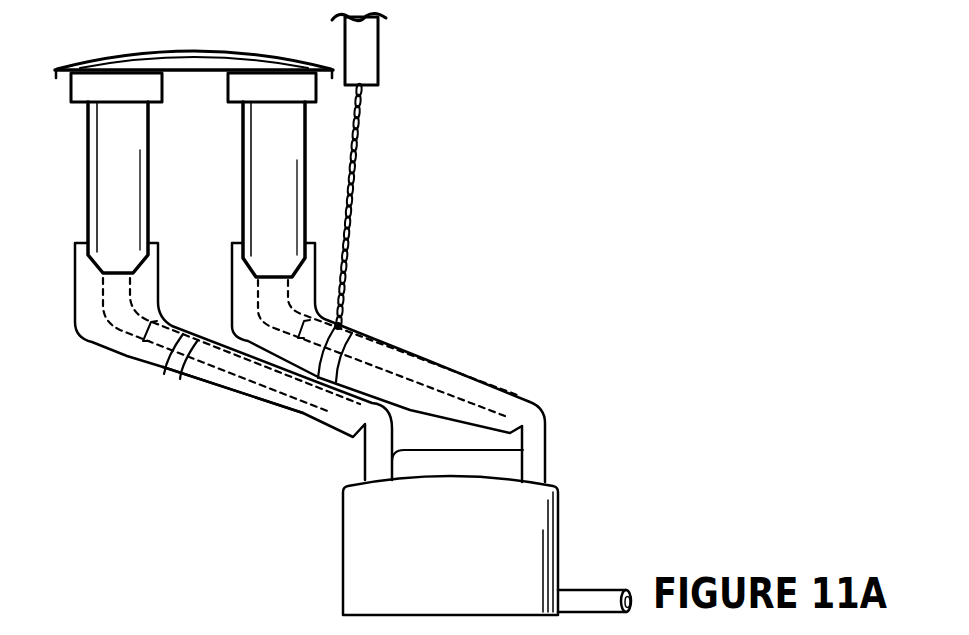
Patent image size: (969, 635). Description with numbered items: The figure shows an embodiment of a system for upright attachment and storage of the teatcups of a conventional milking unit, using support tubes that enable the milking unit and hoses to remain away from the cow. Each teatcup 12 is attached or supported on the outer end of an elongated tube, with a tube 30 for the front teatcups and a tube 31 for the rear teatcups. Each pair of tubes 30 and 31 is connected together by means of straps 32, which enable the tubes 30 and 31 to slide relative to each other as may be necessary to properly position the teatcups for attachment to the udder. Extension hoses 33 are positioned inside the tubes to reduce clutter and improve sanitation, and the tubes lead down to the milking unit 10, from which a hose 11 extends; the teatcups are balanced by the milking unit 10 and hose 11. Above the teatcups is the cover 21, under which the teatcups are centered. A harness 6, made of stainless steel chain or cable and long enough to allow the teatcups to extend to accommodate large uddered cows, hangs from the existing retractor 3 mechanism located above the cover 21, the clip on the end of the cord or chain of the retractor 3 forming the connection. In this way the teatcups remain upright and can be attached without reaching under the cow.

The retractor 3 is at (378, 32).
The harness 6 is at (364, 129).
The milking unit 10 is at (343, 511).
The hose 11 is at (585, 586).
The teatcup 12 is at (87, 173).
The cover 21 is at (240, 50).
The elongated tube for front teatcups 30 is at (126, 357).
The elongated tube for rear teatcups 31 is at (388, 346).
The strap 32 is at (300, 413).
The extension hose 33 is at (218, 371).